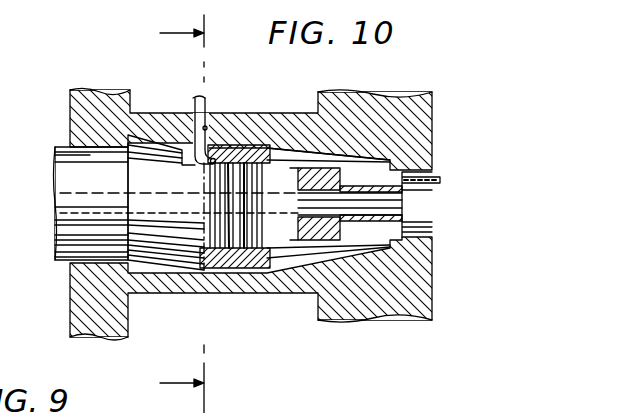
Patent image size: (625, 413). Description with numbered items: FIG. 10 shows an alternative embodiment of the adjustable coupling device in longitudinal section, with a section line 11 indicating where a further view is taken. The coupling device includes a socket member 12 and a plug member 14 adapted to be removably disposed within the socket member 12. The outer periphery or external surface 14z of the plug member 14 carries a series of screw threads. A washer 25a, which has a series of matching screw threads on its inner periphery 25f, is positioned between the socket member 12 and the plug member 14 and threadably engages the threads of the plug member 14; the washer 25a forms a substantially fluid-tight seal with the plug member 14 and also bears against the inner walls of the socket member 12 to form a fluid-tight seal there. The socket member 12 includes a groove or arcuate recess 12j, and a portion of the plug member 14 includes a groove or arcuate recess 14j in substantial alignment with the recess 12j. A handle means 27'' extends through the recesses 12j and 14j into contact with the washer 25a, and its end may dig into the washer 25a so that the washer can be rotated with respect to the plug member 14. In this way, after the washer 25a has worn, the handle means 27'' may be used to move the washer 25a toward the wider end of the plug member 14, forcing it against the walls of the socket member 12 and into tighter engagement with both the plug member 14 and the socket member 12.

The section line 11 is at (168, 214).
The socket member 12 is at (147, 120).
The groove or arcuate recess 12j is at (207, 125).
The plug member 14 is at (55, 240).
The groove or arcuate recess 14j is at (183, 163).
The external surface 14z is at (205, 232).
The washer 25a is at (231, 266).
The inner periphery 25f is at (248, 247).
The handle means 27'' is at (180, 91).